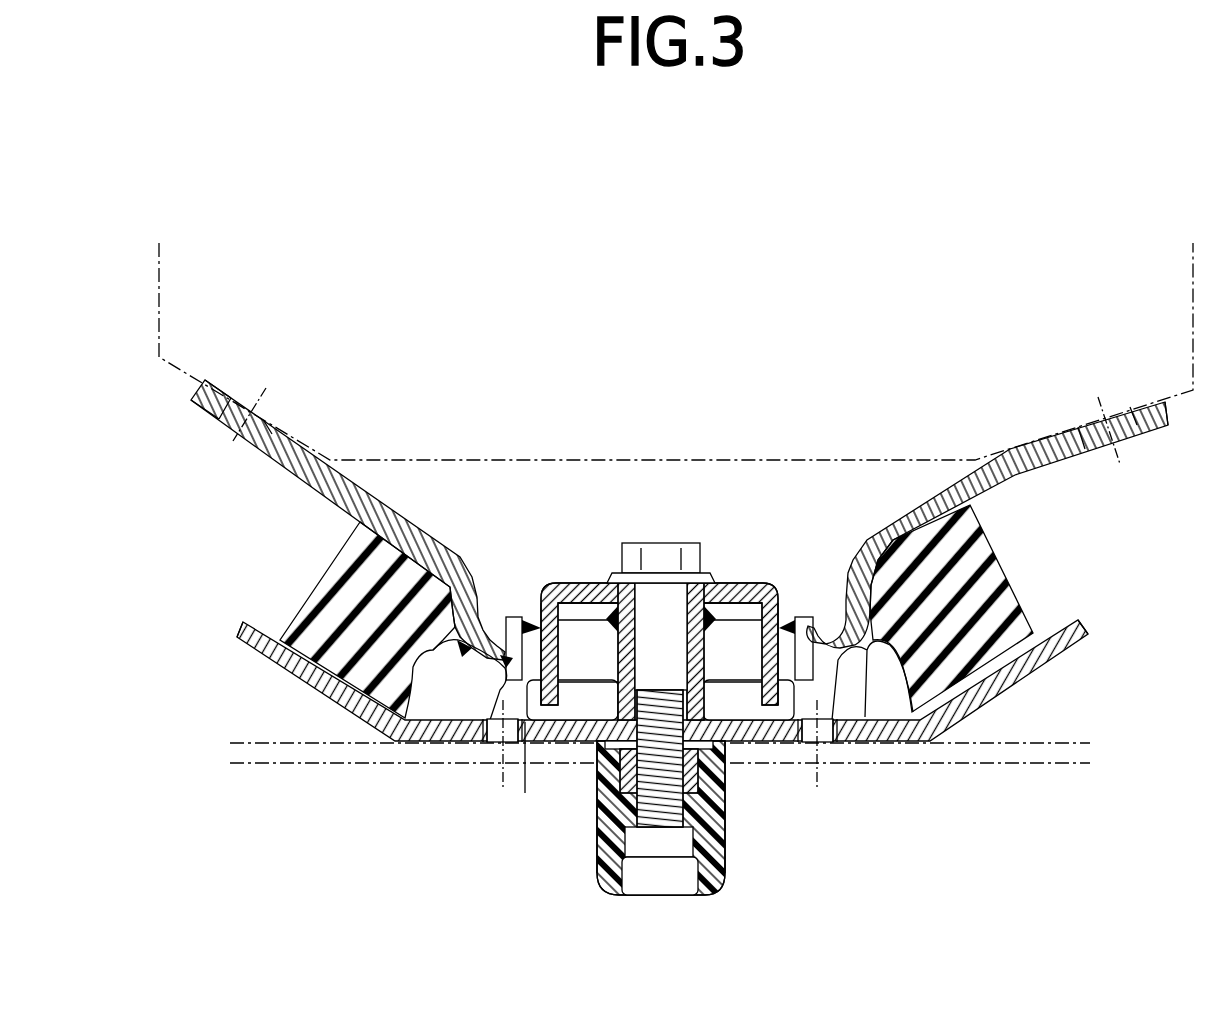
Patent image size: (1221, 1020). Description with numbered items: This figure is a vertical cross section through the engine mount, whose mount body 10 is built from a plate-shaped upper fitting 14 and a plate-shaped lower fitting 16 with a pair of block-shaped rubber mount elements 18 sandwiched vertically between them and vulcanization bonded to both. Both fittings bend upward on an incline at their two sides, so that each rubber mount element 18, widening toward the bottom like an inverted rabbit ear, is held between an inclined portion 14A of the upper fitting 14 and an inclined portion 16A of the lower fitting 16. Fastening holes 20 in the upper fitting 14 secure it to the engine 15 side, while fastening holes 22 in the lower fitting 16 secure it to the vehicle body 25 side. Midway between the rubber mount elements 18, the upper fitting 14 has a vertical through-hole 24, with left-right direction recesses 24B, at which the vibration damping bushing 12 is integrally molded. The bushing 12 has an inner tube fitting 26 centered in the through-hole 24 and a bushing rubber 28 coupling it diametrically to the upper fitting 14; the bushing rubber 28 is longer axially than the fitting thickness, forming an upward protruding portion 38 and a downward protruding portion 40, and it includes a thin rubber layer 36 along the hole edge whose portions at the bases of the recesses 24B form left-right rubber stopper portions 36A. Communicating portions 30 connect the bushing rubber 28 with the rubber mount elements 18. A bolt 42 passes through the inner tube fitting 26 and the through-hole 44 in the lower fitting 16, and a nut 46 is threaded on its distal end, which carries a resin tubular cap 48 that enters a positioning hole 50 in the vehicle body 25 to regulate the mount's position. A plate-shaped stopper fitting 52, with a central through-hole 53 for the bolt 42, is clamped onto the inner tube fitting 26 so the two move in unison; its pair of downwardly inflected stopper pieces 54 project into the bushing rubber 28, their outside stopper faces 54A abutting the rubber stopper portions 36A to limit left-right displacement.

The mount body 10 is at (372, 814).
The vibration damping bushing 12 is at (778, 712).
The upper fitting 14 is at (383, 488).
The inclined portions of the upper fitting 14A is at (303, 457).
The engine 15 is at (670, 329).
The lower fitting 16 is at (440, 745).
The inclined portions of the lower fitting 16A is at (283, 658).
The rubber mount elements 18 is at (340, 565).
The fastening holes 20 is at (224, 416).
The fastening holes 22 is at (500, 745).
The through-hole 24 is at (524, 620).
The left-right direction recesses 24B is at (814, 665).
The vehicle body 25 is at (945, 766).
The inner tube fitting 26 is at (687, 622).
The bushing rubber 28 is at (583, 588).
The communicating portions 30 is at (468, 652).
The rubber layer 36 is at (545, 640).
The left-right direction rubber stopper portions 36A is at (475, 743).
The protruding portion 38 is at (792, 603).
The protruding portion 40 is at (813, 672).
The bolt 42 is at (583, 605).
The through-hole 44 is at (700, 778).
The nut 46 is at (715, 800).
The tubular cap 48 is at (707, 870).
The positioning hole 50 is at (596, 775).
The stopper fitting 52 is at (738, 573).
The through-hole 53 is at (678, 583).
The stopper pieces 54 is at (553, 640).
The stopper faces 54A is at (772, 722).